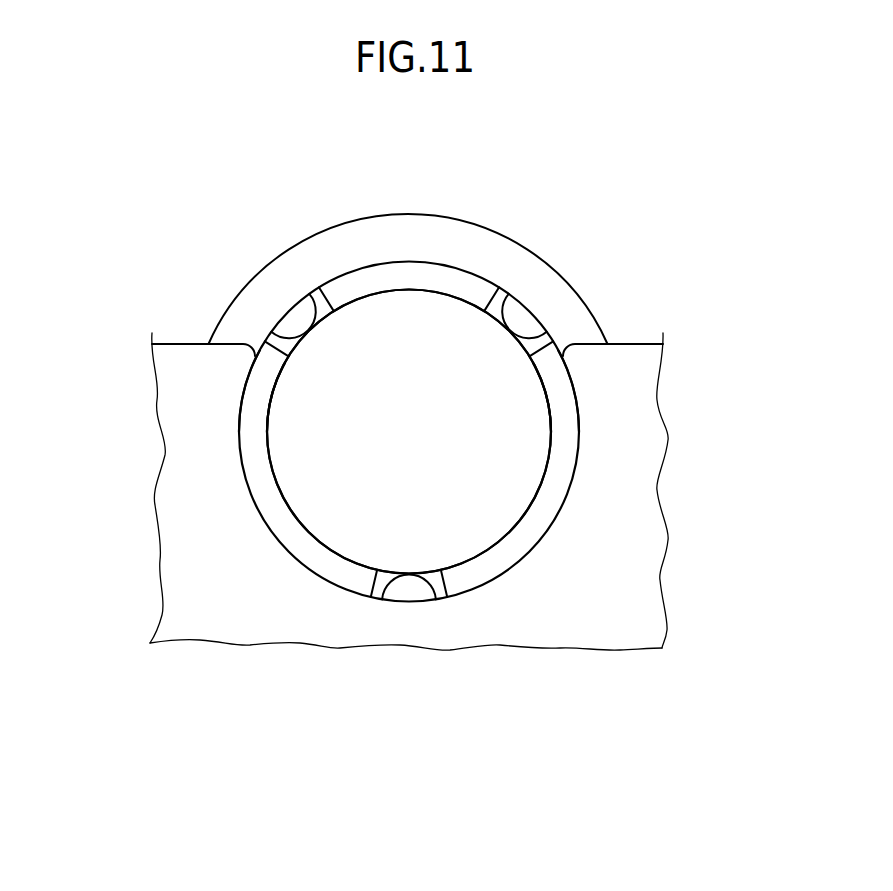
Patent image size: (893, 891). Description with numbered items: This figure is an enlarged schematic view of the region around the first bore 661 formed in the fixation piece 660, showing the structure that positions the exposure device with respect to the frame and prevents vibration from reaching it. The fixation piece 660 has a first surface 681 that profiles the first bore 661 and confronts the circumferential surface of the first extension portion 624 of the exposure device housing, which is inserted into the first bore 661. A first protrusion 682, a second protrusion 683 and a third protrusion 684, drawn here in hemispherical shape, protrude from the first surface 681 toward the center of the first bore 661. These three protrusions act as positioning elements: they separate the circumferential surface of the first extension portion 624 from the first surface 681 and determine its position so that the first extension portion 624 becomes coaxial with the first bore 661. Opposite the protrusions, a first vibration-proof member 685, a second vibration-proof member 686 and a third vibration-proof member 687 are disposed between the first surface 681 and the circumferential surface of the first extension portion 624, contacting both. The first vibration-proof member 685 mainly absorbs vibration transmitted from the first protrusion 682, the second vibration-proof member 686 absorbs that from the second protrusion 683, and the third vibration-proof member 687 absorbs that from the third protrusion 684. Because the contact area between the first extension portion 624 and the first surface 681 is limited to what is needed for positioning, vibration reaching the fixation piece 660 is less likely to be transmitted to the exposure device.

The fixation piece 660 is at (588, 600).
The first bore 661 is at (438, 595).
The first surface 681 is at (370, 594).
The first protrusion 682 is at (407, 590).
The second protrusion 683 is at (297, 322).
The third protrusion 684 is at (517, 320).
The first vibration-proof member 685 is at (403, 277).
The second vibration-proof member 686 is at (560, 458).
The third vibration-proof member 687 is at (258, 455).
The first extension portion 624 is at (509, 396).